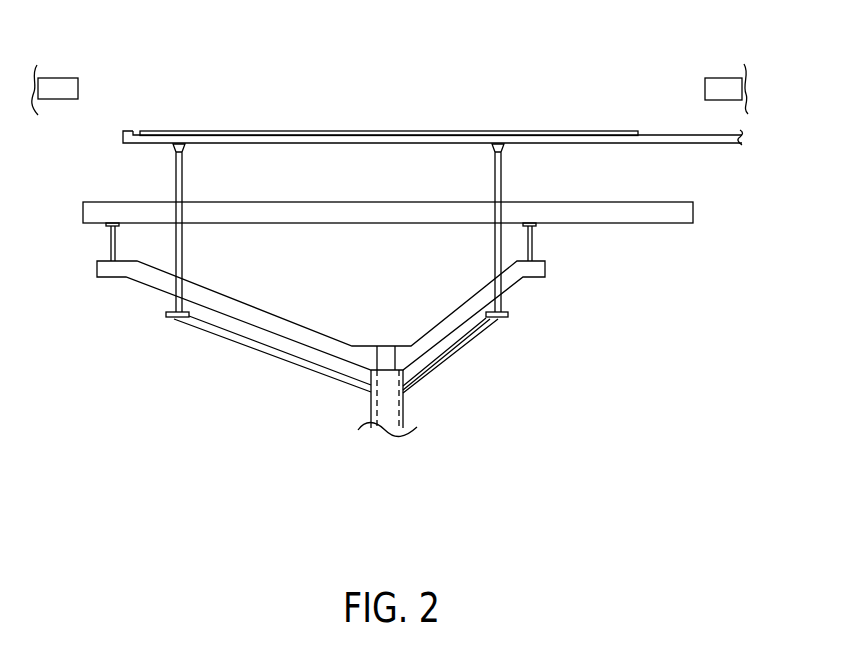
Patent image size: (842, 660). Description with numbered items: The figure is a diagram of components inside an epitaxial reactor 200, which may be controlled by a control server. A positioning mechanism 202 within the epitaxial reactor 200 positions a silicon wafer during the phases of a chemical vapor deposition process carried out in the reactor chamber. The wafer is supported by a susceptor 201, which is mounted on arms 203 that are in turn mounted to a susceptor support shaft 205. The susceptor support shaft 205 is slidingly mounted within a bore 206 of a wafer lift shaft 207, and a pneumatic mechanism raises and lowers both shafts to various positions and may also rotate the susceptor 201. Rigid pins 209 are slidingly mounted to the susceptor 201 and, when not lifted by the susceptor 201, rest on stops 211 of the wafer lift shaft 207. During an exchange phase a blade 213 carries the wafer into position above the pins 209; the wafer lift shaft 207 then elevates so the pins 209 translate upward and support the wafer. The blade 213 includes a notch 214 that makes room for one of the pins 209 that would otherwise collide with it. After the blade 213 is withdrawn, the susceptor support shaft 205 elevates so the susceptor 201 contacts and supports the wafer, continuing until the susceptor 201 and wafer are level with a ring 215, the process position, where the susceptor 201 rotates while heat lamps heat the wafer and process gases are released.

The epitaxial reactor 200 is at (316, 78).
The susceptor 201 is at (657, 202).
The positioning mechanism 202 is at (467, 78).
The arms 203 is at (545, 268).
The susceptor support shaft 205 is at (370, 408).
The bore 206 is at (394, 412).
The wafer lift shaft 207 is at (403, 415).
The rigid pins 209 is at (175, 180).
The stops 211 is at (162, 315).
The blade 213 is at (669, 134).
The notch 214 is at (183, 140).
The ring 215 is at (78, 88).